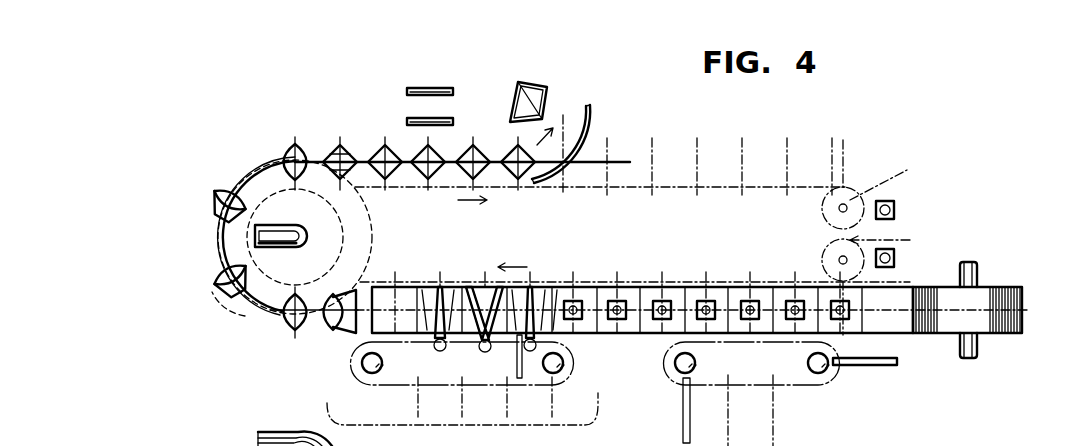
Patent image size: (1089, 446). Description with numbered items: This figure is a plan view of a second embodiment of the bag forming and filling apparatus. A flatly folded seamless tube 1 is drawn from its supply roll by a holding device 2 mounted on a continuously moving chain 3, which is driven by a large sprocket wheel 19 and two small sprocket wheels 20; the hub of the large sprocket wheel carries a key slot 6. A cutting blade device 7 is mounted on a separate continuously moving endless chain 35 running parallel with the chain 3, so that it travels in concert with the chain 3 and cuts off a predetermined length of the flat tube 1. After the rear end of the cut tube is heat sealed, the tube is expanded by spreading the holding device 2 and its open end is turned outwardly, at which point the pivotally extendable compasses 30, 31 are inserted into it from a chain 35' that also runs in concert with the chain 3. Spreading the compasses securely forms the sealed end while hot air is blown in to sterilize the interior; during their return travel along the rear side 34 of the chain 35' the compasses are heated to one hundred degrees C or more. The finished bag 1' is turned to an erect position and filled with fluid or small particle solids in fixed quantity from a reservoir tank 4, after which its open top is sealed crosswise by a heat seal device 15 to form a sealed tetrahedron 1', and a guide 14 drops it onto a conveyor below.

The flatly folded seamless tube 1 is at (967, 312).
The bag 1' is at (444, 210).
The holding device 2 is at (440, 287).
The continuously moving chain 3 is at (658, 187).
The reservoir tank 4 is at (260, 310).
The key slot 6 is at (274, 230).
The cutting blade device 7 is at (868, 366).
The guide 14 is at (593, 112).
The heat seal device 15 is at (433, 88).
The large sprocket wheel 19 is at (343, 222).
The small sprocket wheels 20 is at (822, 210).
The pivotally extendable compass 30 is at (482, 350).
The pivotally extendable compass 31 is at (468, 347).
The rear side of chain 34 is at (446, 427).
The continuously moving endless chain 35 is at (752, 394).
The chain 35' is at (483, 363).